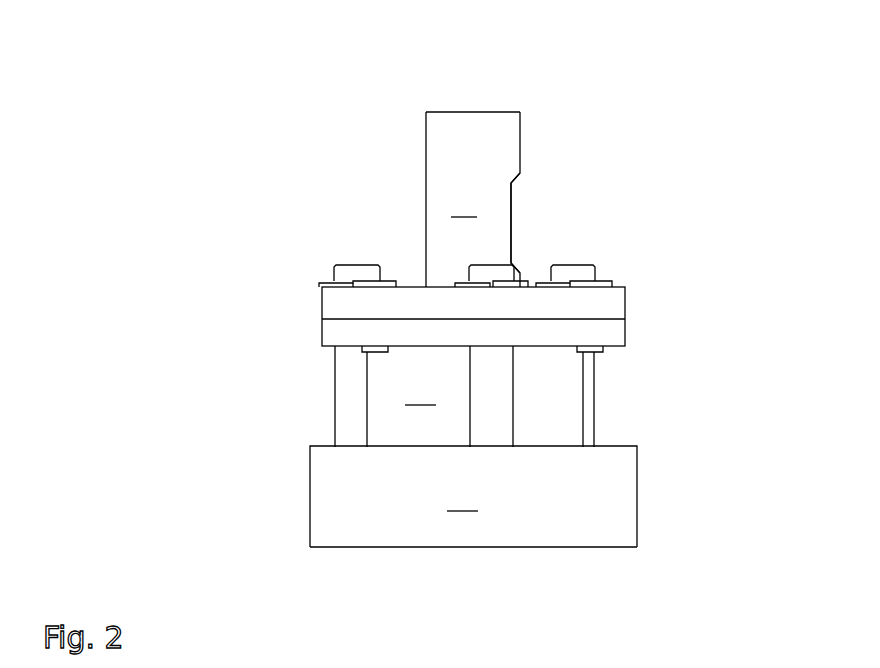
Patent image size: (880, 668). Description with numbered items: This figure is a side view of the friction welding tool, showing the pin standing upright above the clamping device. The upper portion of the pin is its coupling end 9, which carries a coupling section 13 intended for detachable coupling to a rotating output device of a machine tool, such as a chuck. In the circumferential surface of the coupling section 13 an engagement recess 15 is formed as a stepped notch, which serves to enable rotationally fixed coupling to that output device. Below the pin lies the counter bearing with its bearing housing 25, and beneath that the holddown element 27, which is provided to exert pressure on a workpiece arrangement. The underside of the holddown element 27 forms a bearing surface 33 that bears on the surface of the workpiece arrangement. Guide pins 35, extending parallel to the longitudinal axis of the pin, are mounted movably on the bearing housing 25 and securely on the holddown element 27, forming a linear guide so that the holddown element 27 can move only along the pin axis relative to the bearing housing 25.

The coupling end 9 is at (600, 161).
The coupling section 13 is at (473, 199).
The engagement recess 15 is at (512, 212).
The bearing housing 25 is at (459, 396).
The holddown element 27 is at (443, 537).
The bearing surface 33 is at (350, 547).
The guide pins 35 is at (350, 391).